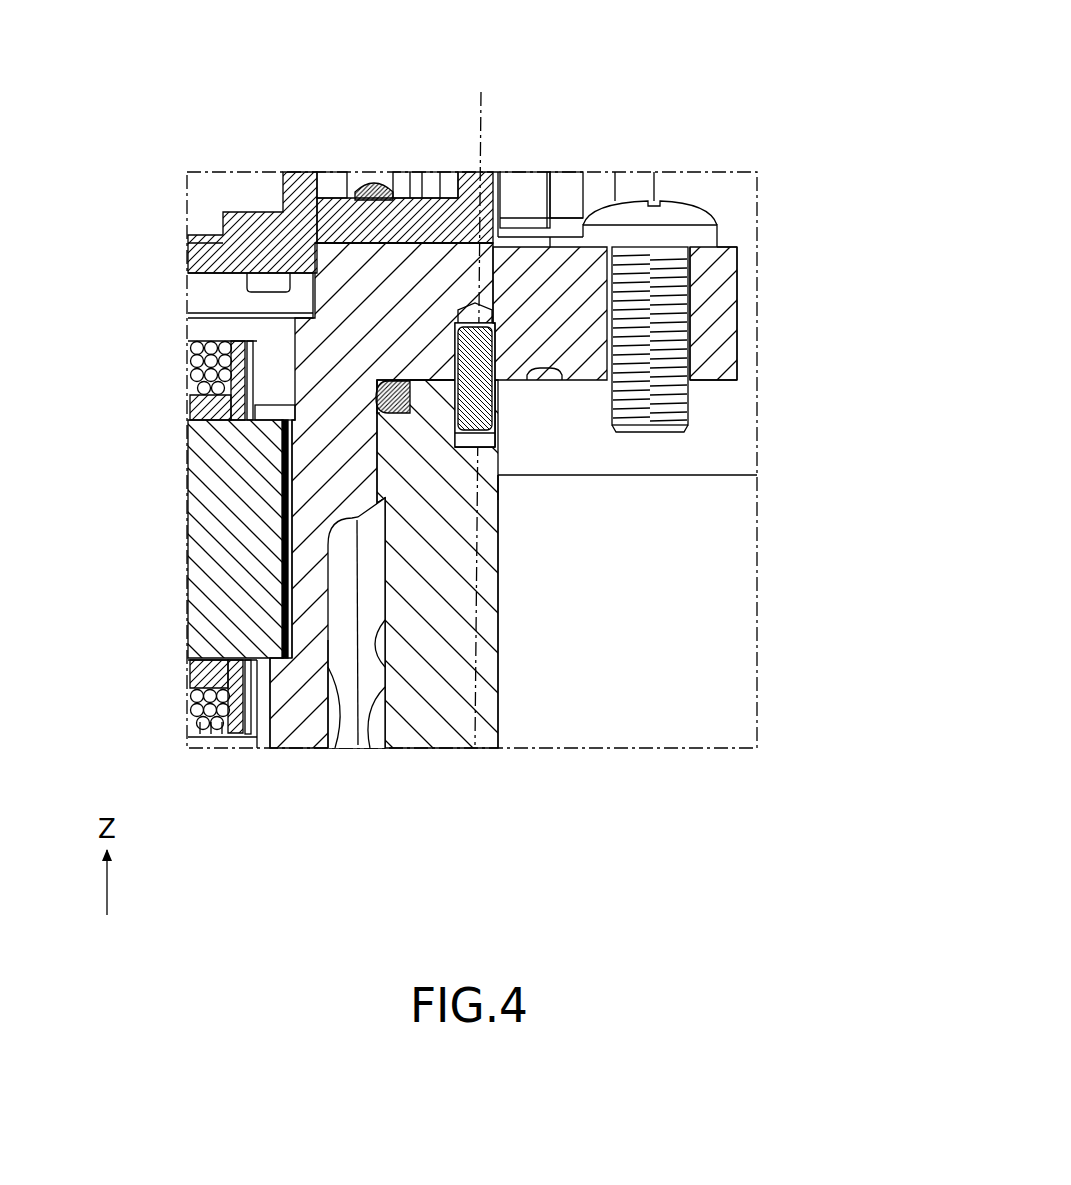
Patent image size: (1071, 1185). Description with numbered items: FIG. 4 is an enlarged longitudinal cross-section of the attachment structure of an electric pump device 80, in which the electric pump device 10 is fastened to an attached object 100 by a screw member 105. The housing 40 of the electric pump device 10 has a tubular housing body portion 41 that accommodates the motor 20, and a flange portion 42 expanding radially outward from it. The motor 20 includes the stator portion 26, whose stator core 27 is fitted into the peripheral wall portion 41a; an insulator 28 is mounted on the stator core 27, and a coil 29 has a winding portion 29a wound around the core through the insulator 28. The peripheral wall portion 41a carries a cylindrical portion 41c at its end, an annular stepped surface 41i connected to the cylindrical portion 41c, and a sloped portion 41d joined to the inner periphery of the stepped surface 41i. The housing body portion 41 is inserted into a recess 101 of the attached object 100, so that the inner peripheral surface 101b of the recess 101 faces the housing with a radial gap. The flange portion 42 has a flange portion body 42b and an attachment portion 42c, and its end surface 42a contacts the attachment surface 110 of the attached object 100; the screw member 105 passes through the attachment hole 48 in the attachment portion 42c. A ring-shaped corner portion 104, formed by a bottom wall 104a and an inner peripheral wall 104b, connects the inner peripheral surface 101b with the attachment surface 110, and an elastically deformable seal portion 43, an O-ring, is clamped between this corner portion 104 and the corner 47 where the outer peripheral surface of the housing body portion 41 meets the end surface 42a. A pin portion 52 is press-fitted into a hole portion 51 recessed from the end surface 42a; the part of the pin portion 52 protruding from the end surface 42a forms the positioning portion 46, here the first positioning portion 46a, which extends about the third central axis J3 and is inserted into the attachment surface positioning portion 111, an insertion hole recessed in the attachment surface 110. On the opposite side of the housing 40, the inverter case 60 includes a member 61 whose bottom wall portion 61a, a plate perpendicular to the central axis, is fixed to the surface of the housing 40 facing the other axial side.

The electric pump device 10 is at (650, 120).
The motor 20 is at (183, 378).
The stator portion 26 is at (182, 584).
The stator core 27 is at (203, 575).
The insulator 28 is at (220, 410).
The coil 29 is at (188, 716).
The winding portion 29a is at (202, 378).
The housing 40 is at (354, 570).
The housing body portion 41 is at (354, 548).
The peripheral wall portion 41a is at (290, 740).
The cylindrical portion 41c is at (487, 745).
The sloped portion 41d is at (337, 745).
The stepped surface 41i is at (359, 745).
The flange portion 42 is at (582, 283).
The end surface 42a is at (500, 403).
The flange portion body 42b is at (413, 360).
The attachment portion 42c is at (727, 297).
The seal portion 43 is at (388, 382).
The positioning portion 46 is at (643, 500).
The first positioning portion 46a is at (482, 440).
The corner 47 is at (377, 400).
The attachment hole 48 is at (690, 325).
The hole portion 51 is at (514, 177).
The pin portion 52 is at (506, 268).
The inverter case 60 is at (371, 159).
The arm housing wall 61 is at (291, 182).
The bottom wall portion 61a is at (200, 255).
The attachment structure of an electric pump device 80 is at (582, 431).
The attached object 100 is at (502, 667).
The recess 101 is at (393, 675).
The inner peripheral surface 101b is at (427, 745).
The corner portion 104 is at (264, 298).
The bottom wall 104a is at (377, 405).
The inner peripheral wall 104b is at (368, 182).
The screw member 105 is at (714, 298).
The attachment surface 110 is at (688, 362).
The attachment surface positioning portion 111 is at (505, 470).
The third central axis J3 is at (480, 403).